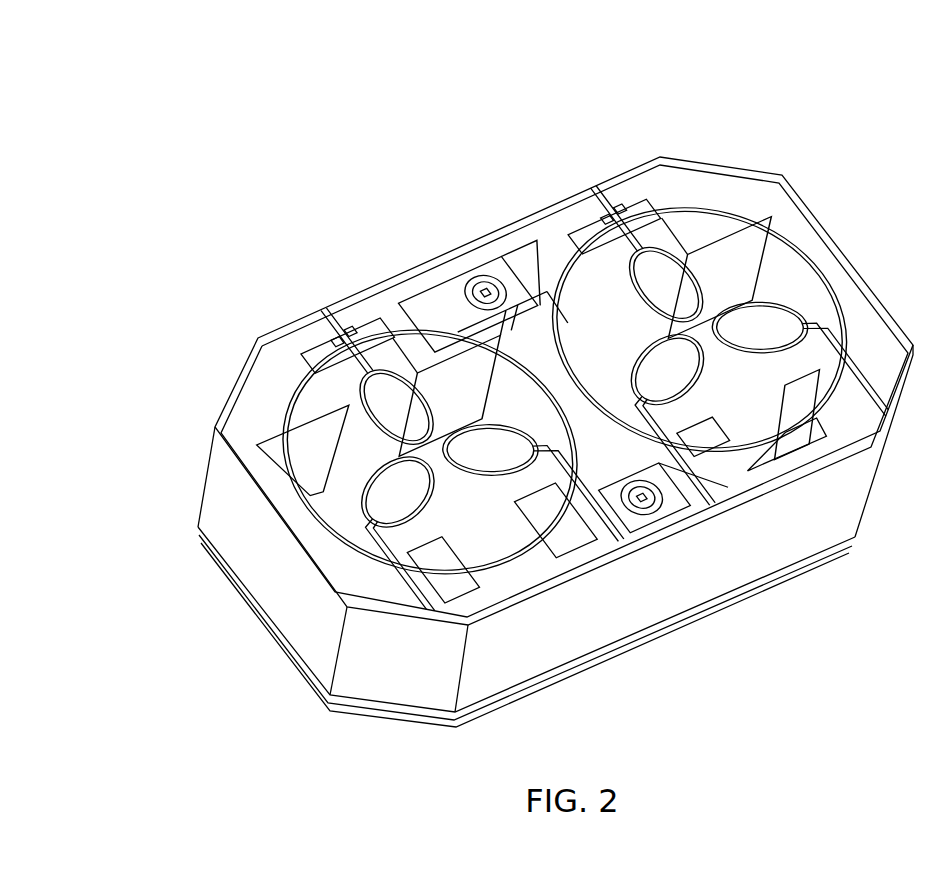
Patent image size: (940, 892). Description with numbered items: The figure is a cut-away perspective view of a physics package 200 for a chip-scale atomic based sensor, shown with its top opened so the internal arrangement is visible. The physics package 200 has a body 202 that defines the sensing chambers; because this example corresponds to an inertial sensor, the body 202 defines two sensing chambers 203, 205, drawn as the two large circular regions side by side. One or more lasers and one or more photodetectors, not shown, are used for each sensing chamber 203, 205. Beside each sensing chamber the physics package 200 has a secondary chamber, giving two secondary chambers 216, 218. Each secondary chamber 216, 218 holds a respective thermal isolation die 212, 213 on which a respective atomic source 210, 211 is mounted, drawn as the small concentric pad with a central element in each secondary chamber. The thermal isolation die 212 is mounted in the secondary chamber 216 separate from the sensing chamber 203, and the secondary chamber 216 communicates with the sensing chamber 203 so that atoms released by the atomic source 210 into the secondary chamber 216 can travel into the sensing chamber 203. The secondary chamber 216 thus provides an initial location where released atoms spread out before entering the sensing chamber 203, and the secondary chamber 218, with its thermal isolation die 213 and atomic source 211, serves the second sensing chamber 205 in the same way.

The physics package 200 is at (545, 383).
The body 202 is at (717, 183).
The sensing chamber 203 is at (735, 244).
The sensing chamber 205 is at (312, 434).
The atomic source 210 is at (473, 288).
The atomic source 211 is at (650, 507).
The thermal isolation die 212 is at (485, 273).
The thermal isolation die 213 is at (635, 520).
The secondary chamber 216 is at (515, 260).
The secondary chamber 218 is at (677, 479).